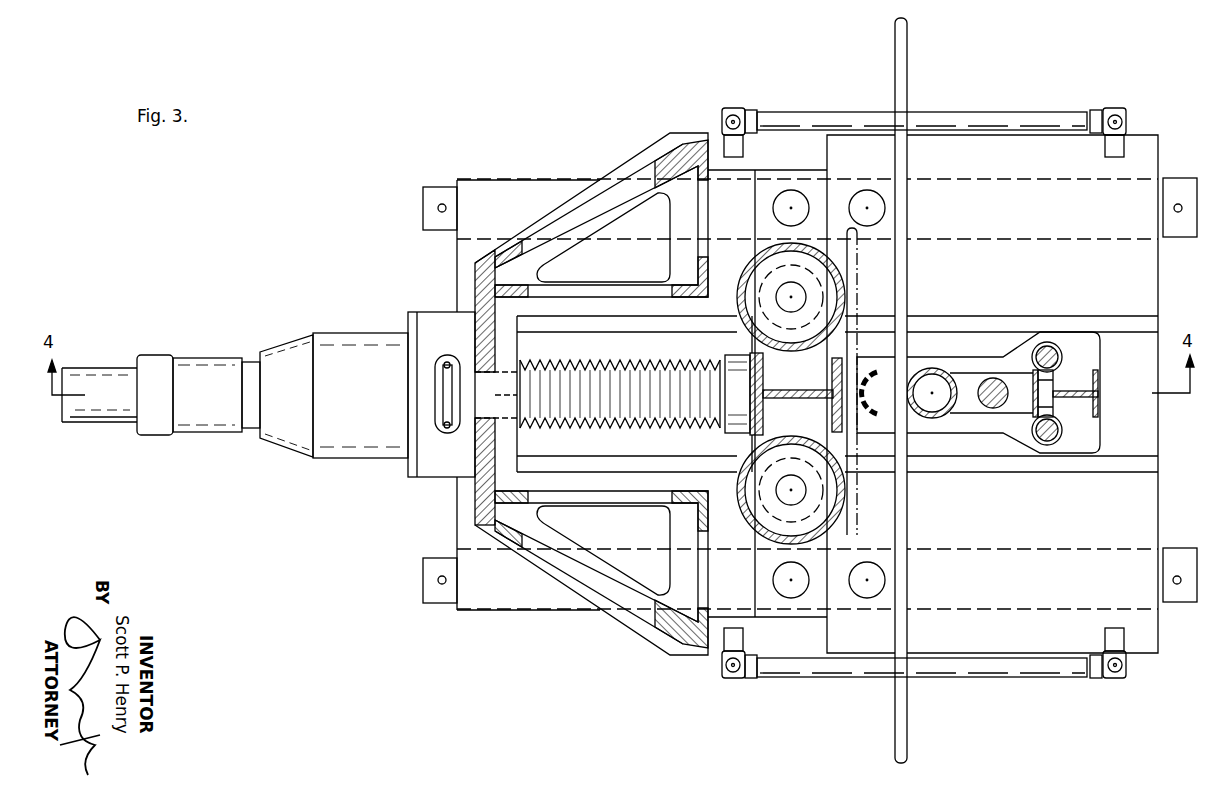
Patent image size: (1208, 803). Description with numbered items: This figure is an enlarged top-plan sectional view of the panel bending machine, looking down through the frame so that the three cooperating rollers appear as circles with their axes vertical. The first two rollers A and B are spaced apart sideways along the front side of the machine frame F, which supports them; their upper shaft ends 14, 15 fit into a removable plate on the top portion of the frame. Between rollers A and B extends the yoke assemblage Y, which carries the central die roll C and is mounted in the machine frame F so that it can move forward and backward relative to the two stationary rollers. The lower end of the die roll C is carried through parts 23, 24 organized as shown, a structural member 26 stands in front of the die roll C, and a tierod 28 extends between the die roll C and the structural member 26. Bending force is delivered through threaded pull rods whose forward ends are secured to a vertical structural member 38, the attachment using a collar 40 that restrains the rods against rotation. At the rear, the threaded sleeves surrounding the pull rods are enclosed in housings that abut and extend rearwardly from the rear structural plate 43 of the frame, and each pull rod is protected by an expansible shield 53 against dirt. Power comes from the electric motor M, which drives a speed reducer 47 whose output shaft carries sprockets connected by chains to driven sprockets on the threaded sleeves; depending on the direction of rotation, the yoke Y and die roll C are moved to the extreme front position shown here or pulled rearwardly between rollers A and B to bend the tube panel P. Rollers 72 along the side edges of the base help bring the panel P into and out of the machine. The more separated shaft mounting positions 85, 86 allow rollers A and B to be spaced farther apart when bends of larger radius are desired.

The upper shaft end 14 is at (776, 490).
The upper shaft end 15 is at (776, 297).
The part 23 is at (1015, 323).
The part 24 is at (1098, 363).
The structural member 26 is at (1073, 398).
The tierod 28 is at (988, 380).
The vertical structural member 38 is at (765, 378).
The collar 40 is at (737, 352).
The rear structural plate 43 is at (475, 290).
The speed reducer 47 is at (365, 333).
The expansible shield 53 is at (647, 362).
The rollers 72 is at (968, 112).
The shaft mounting position 85 is at (791, 197).
The shaft mounting position 86 is at (791, 598).
The first roller A is at (777, 503).
The second roller B is at (777, 283).
The central die roll C is at (940, 372).
The machine frame F is at (695, 143).
The electric motor M is at (268, 386).
The tube panel P is at (872, 715).
The yoke assemblage Y is at (995, 427).